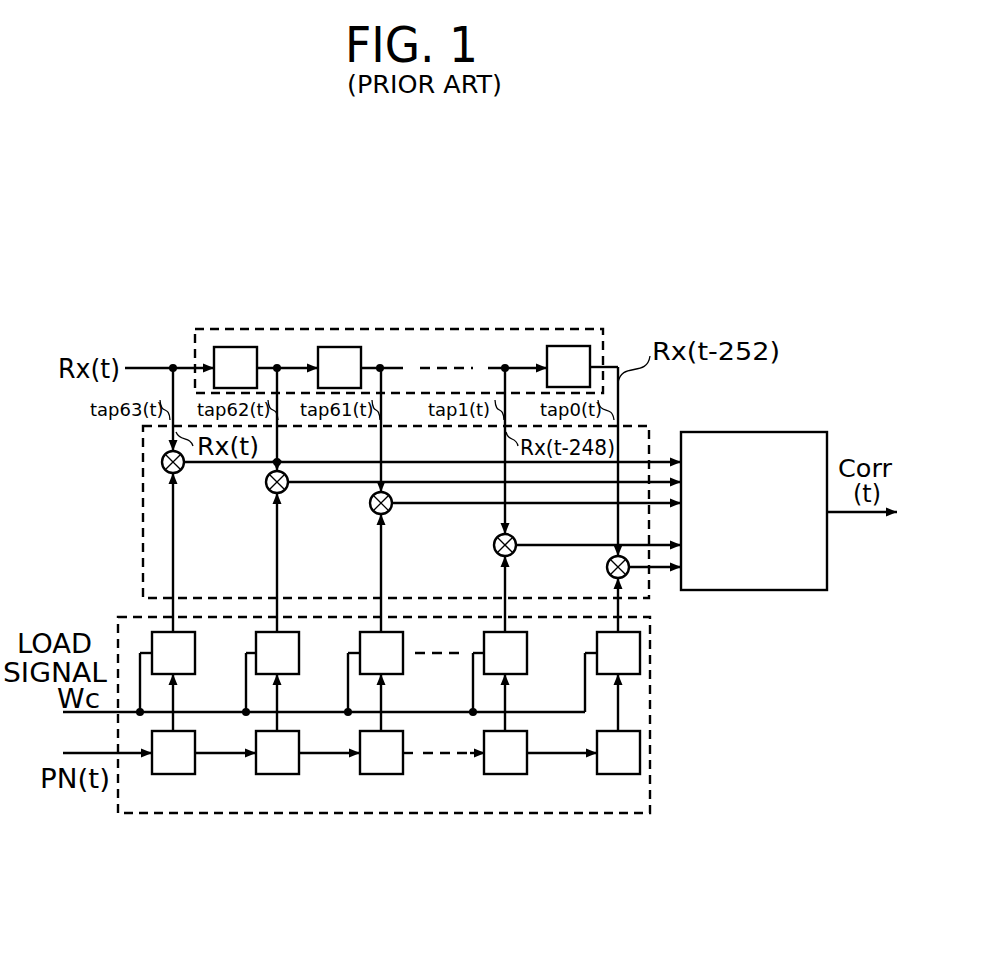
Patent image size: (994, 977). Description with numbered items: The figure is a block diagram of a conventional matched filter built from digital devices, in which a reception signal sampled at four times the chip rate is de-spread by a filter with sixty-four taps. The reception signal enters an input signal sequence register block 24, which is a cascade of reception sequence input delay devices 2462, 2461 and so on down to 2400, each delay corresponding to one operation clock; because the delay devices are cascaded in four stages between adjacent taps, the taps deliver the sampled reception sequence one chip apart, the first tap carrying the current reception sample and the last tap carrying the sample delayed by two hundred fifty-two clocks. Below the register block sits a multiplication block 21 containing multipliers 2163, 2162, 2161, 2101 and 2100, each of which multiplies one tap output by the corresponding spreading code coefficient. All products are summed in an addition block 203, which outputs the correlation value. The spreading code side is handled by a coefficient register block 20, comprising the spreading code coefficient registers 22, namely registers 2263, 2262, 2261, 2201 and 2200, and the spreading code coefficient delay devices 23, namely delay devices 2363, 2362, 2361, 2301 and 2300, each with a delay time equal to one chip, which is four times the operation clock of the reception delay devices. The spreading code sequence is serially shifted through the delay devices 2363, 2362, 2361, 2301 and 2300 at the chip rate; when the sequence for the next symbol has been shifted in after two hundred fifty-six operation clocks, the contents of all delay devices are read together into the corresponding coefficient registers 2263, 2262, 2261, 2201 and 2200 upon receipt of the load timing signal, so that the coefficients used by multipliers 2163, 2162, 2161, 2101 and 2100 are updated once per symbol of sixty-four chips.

The input signal sequence register block 24 is at (478, 328).
The reception sequence input delay device 2462 is at (225, 347).
The reception sequence input delay device 2461 is at (335, 347).
The reception sequence input delay device 2400 is at (556, 346).
The multiplication block 21 is at (142, 522).
The multiplier 2163 is at (162, 462).
The multiplier 2162 is at (266, 488).
The multiplier 2161 is at (370, 506).
The multiplier 2101 is at (494, 545).
The multiplier 2100 is at (607, 566).
The addition block 203 is at (698, 432).
The coefficient register block 20 is at (650, 712).
The spreading code coefficient registers 22 is at (460, 700).
The spreading code coefficient register 2263 is at (185, 630).
The spreading code coefficient register 2262 is at (290, 630).
The spreading code coefficient register 2261 is at (392, 630).
The spreading code coefficient register 2201 is at (517, 630).
The spreading code coefficient register 2200 is at (640, 641).
The spreading code coefficient delay devices 23 is at (460, 801).
The spreading code coefficient delay device 2363 is at (168, 775).
The spreading code coefficient delay device 2362 is at (273, 775).
The spreading code coefficient delay device 2361 is at (377, 775).
The spreading code coefficient delay device 2301 is at (498, 775).
The spreading code coefficient delay device 2300 is at (614, 775).